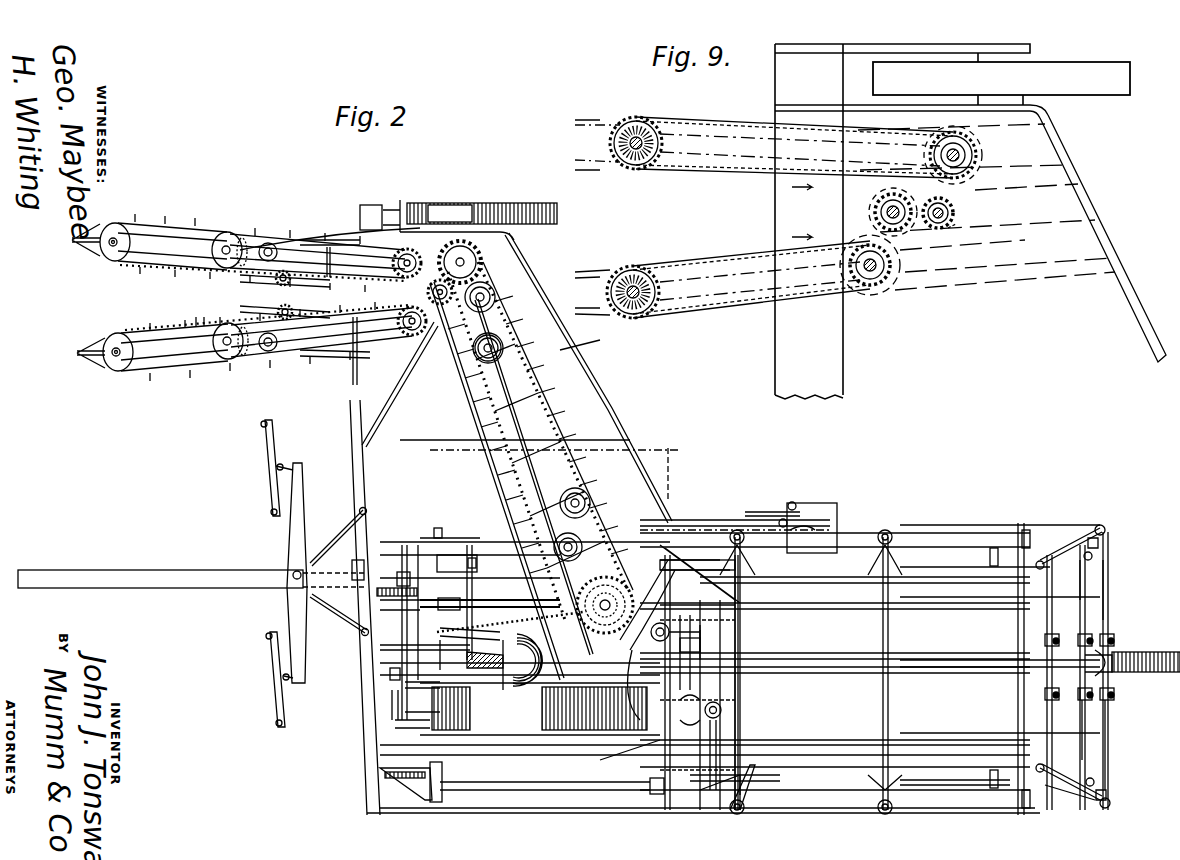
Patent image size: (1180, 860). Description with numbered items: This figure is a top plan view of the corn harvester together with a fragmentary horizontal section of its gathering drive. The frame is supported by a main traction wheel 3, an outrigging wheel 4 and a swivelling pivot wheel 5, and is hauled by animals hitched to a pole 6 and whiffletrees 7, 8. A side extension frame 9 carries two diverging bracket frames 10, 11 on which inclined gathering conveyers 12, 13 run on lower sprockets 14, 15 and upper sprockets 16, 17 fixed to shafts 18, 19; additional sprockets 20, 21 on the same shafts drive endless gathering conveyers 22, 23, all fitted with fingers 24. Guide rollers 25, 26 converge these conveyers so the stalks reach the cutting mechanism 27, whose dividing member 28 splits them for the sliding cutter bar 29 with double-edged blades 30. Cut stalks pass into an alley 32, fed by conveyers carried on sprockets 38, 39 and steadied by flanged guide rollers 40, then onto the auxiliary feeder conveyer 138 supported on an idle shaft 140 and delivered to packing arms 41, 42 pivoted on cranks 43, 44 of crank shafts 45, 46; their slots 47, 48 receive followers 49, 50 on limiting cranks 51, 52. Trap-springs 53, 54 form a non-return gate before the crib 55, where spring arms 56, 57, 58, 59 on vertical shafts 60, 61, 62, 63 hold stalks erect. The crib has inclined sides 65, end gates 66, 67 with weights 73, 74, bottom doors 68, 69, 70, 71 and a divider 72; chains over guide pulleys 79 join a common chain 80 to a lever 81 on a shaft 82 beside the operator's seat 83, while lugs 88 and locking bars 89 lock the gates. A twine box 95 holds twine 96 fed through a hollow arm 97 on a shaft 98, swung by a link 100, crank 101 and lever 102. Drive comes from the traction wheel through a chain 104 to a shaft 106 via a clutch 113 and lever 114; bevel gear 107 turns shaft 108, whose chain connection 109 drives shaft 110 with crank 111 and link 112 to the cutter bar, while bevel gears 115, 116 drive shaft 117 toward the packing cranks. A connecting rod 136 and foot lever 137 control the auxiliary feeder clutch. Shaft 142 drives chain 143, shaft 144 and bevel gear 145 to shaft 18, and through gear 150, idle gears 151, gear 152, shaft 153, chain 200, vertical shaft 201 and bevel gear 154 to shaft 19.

In FIG. 2, the main traction wheel 3 is at (525, 725).
In FIG. 2, the outrigging wheel 4 is at (552, 208).
In FIG. 2, the pivot wheel 5 is at (1165, 664).
In FIG. 2, the pole 6 is at (210, 588).
In FIG. 2, the whiffletree 7 is at (276, 496).
In FIG. 2, the whiffletree 8 is at (440, 422).
In FIG. 2, the extension frame 9 is at (590, 388).
In FIG. 2, the bracket frame 10 is at (88, 244).
In FIG. 2, the bracket frame 11 is at (88, 358).
In FIG. 2, the gathering conveyer 12 is at (135, 266).
In FIG. 2, the gathering conveyer 13 is at (158, 322).
In FIG. 2, the sprocket 14 is at (128, 230).
In FIG. 2, the sprocket 15 is at (128, 372).
In FIG. 2, the sprocket 16 is at (232, 232).
In FIG. 2, the sprocket 17 is at (220, 360).
In FIG. 2, the shaft 18 is at (268, 245).
In FIG. 2, the shaft 19 is at (262, 352).
In FIG. 2, the sprocket 20 is at (252, 240).
In FIG. 2, the sprocket 21 is at (242, 358).
In FIG. 2, the endless gathering conveyer 22 is at (300, 240).
In FIG. 2, the endless gathering conveyer 23 is at (310, 355).
In FIG. 2, the fingers 24 is at (200, 324).
In FIG. 2, the guide roller 25 is at (330, 238).
In FIG. 2, the guide roller 26 is at (285, 320).
In FIG. 2, the cutting mechanism 27 is at (410, 212).
In FIG. 2, the dividing member 28 is at (372, 212).
In FIG. 2, the cutter bar 29 is at (390, 212).
In FIG. 2, the double-edged blades 30 is at (345, 360).
In FIG. 2, the alley 32 is at (605, 725).
In FIG. 2, the sprocket 38 is at (500, 222).
In FIG. 2, the sprocket 39 is at (618, 590).
In FIG. 2, the flanged guide rollers 40 is at (498, 288).
In FIG. 2, the packing arm 41 is at (778, 577).
In FIG. 2, the packing arm 42 is at (722, 740).
In FIG. 2, the crank 43 is at (700, 632).
In FIG. 2, the crank 44 is at (722, 708).
In FIG. 2, the crank shaft 45 is at (690, 642).
In FIG. 2, the crank shaft 46 is at (655, 740).
In FIG. 2, the slot 47 is at (738, 525).
In FIG. 2, the slot 48 is at (760, 780).
In FIG. 2, the follower 49 is at (783, 520).
In FIG. 2, the follower 50 is at (745, 795).
In FIG. 2, the limiting crank 51 is at (700, 540).
In FIG. 2, the limiting crank 52 is at (660, 790).
In FIG. 2, the trap-spring 53 is at (700, 660).
In FIG. 2, the trap-spring 54 is at (710, 673).
In FIG. 2, the crib 55 is at (950, 580).
In FIG. 2, the spring arm 56 is at (700, 583).
In FIG. 2, the spring arm 57 is at (720, 782).
In FIG. 2, the spring arm 58 is at (880, 646).
In FIG. 2, the spring arm 59 is at (882, 732).
In FIG. 2, the vertical shaft 60 is at (760, 515).
In FIG. 2, the vertical shaft 61 is at (752, 805).
In FIG. 2, the vertical shaft 62 is at (890, 532).
In FIG. 2, the vertical shaft 63 is at (895, 790).
In FIG. 2, the sides 65 is at (990, 545).
In FIG. 2, the end gate 66 is at (1098, 532).
In FIG. 2, the end gate 67 is at (1082, 722).
In FIG. 2, the bottom door 68 is at (1095, 590).
In FIG. 2, the bottom door 69 is at (1105, 636).
In FIG. 2, the bottom door 70 is at (1106, 742).
In FIG. 2, the bottom door 71 is at (1090, 775).
In FIG. 2, the divider 72 is at (958, 662).
In FIG. 2, the weight 73 is at (1116, 644).
In FIG. 2, the weight 74 is at (1100, 696).
In FIG. 2, the guide pulleys 79 is at (705, 606).
In FIG. 2, the common chain 80 is at (522, 600).
In FIG. 2, the lever 81 is at (470, 655).
In FIG. 2, the shaft 82 is at (390, 648).
In FIG. 2, the operator's seat 83 is at (512, 682).
In FIG. 2, the lug 88 is at (1098, 548).
In FIG. 2, the locking bar 89 is at (1096, 556).
In FIG. 2, the twine box 95 is at (830, 520).
In FIG. 2, the twine 96 is at (810, 530).
In FIG. 2, the hollow arm 97 is at (700, 522).
In FIG. 2, the shaft 98 is at (795, 500).
In FIG. 2, the link 100 is at (672, 522).
In FIG. 2, the crank 101 is at (438, 528).
In FIG. 2, the lever 102 is at (390, 675).
In FIG. 2, the chain 104 is at (410, 690).
In FIG. 2, the shaft 106 is at (382, 610).
In FIG. 2, the bevel gear 107 is at (392, 560).
In FIG. 2, the shaft 108 is at (475, 610).
In FIG. 2, the sprocket gear and chain connection 109 is at (475, 558).
In FIG. 2, the shaft 110 is at (410, 560).
In FIG. 2, the crank 111 is at (352, 570).
In FIG. 2, the link 112 is at (350, 478).
In FIG. 2, the clutch 113 is at (395, 698).
In FIG. 2, the lever 114 is at (395, 720).
In FIG. 2, the bevel gear 115 is at (382, 775).
In FIG. 2, the bevel gear 116 is at (440, 776).
In FIG. 2, the shaft 117 is at (500, 786).
In FIG. 2, the connecting rod 136 is at (498, 640).
In FIG. 2, the foot lever 137 is at (445, 640).
In FIG. 2, the auxiliary feeder conveyer 138 is at (632, 612).
In FIG. 2, the idle shaft 140 is at (648, 650).
In FIG. 2, the shaft 142 is at (492, 220).
In FIG. 9, the shaft 142 is at (960, 152).
In FIG. 2, the chain-and-sprocket connection 143 is at (286, 284).
In FIG. 9, the chain-and-sprocket connection 143 is at (748, 174).
In FIG. 9, the shaft 144 is at (636, 160).
In FIG. 9, the bevel gear 145 is at (648, 130).
In FIG. 9, the gear 150 is at (960, 190).
In FIG. 2, the idle gears 151 is at (440, 305).
In FIG. 9, the idle gears 151 is at (870, 210).
In FIG. 9, the gear 152 is at (880, 296).
In FIG. 9, the shaft 153 is at (848, 265).
In FIG. 9, the bevel gear 154 is at (640, 305).
In FIG. 9, the endless chain 200 is at (752, 258).
In FIG. 9, the vertical shaft 201 is at (656, 274).